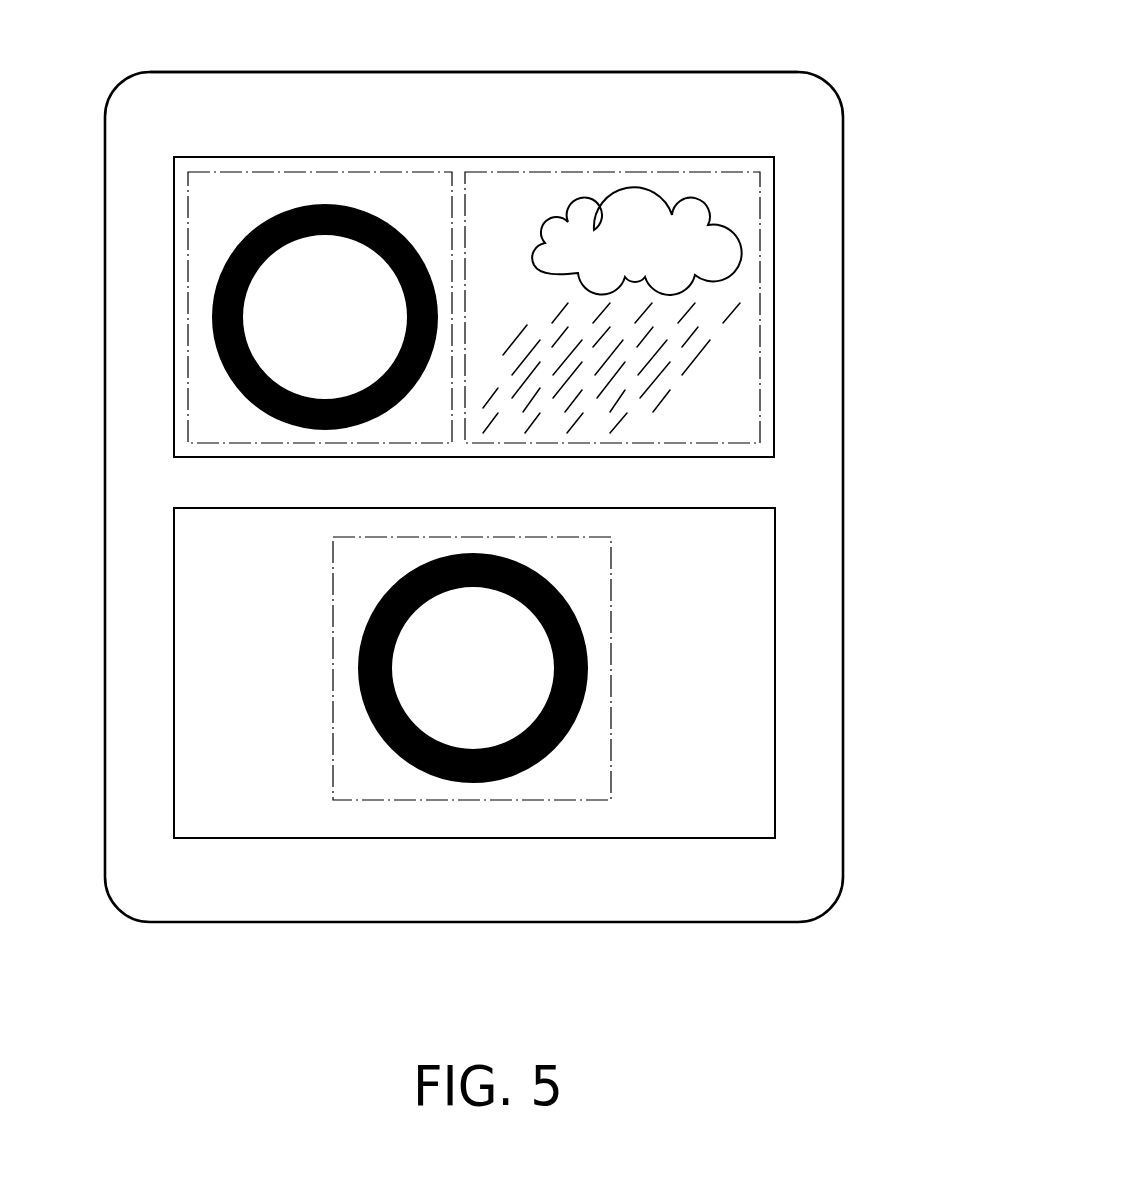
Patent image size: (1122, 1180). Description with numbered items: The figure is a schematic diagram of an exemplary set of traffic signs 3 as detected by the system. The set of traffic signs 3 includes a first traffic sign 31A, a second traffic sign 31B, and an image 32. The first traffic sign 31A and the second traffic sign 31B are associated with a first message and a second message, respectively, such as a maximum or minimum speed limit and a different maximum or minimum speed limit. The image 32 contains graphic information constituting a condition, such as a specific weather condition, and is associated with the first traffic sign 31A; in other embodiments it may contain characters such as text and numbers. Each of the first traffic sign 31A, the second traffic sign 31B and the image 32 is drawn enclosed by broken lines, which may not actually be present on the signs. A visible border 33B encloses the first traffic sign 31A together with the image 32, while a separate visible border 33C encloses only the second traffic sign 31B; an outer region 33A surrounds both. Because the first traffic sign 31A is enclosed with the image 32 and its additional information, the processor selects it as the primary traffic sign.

The set of traffic signs 3 is at (836, 72).
The first display region 33A is at (703, 72).
The visible border 33B is at (703, 157).
The visible border 33C is at (720, 508).
The first traffic sign 31A is at (188, 275).
The image 32 is at (760, 275).
The second traffic sign 31B is at (611, 628).